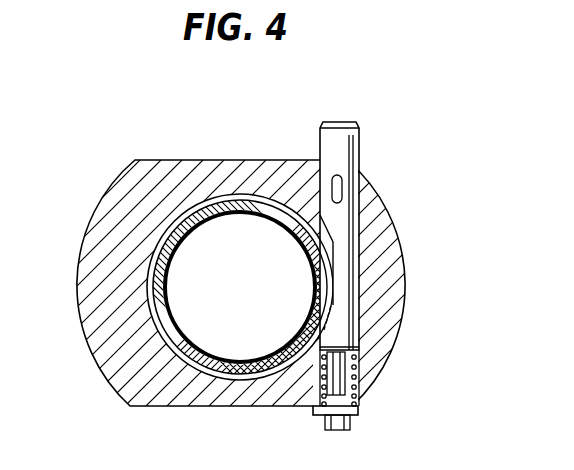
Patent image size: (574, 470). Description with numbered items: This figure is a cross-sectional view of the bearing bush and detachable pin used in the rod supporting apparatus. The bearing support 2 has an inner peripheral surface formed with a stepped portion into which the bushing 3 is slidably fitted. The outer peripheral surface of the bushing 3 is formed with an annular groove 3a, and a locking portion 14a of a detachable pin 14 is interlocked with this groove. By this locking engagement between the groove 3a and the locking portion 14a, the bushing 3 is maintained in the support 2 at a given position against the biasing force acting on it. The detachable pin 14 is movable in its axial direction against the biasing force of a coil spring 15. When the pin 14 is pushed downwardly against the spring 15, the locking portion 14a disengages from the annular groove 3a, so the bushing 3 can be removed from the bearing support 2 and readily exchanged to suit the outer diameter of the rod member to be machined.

The bearing support 2 is at (155, 174).
The bushing 3 is at (215, 207).
The annular groove 3a is at (250, 196).
The detachable pin 14 is at (342, 149).
The locking portion 14a is at (322, 322).
The coil spring 15 is at (356, 373).